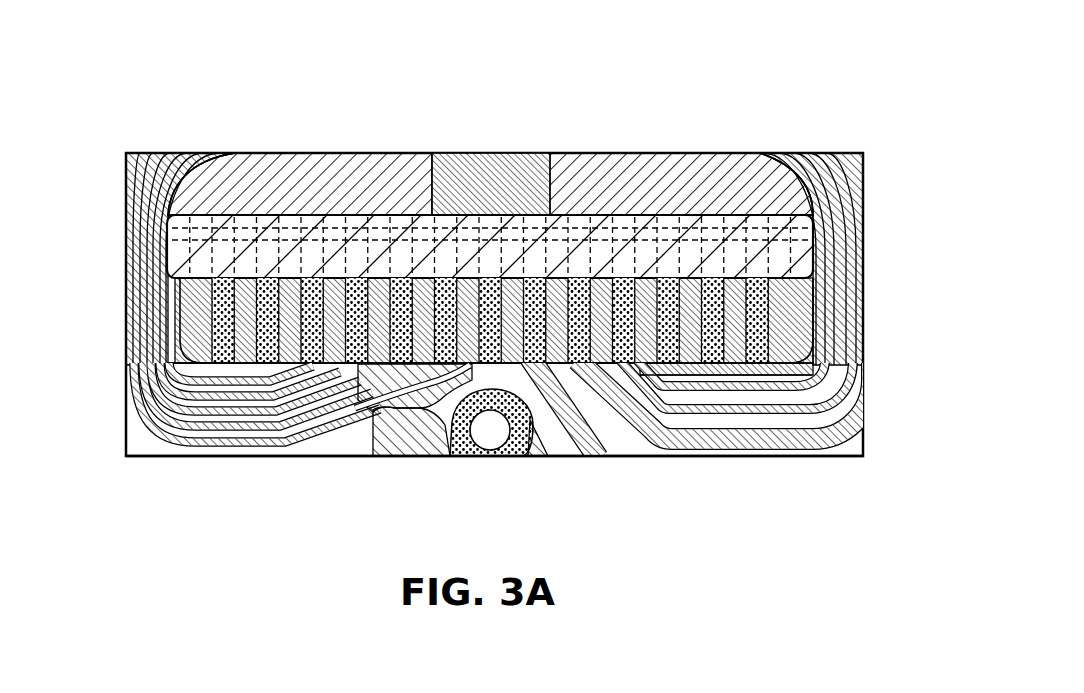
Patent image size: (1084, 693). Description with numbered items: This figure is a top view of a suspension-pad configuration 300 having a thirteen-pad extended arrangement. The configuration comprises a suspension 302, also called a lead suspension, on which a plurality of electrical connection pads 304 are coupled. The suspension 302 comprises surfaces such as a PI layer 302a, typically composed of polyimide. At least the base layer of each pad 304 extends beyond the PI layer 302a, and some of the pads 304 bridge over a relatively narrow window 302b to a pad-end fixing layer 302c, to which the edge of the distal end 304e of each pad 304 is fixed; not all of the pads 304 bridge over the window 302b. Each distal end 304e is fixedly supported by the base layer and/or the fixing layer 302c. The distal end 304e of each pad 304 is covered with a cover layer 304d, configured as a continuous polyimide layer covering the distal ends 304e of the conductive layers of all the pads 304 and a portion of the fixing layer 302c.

The suspension-pad configuration 300 is at (218, 62).
The suspension 302 is at (825, 153).
The PI layer 302a is at (165, 352).
The window 302b is at (376, 237).
The pad-end fixing layer 302c is at (343, 213).
The electrical connection pad 304 is at (770, 494).
The cover layer 304d is at (562, 217).
The distal end 304e is at (262, 240).